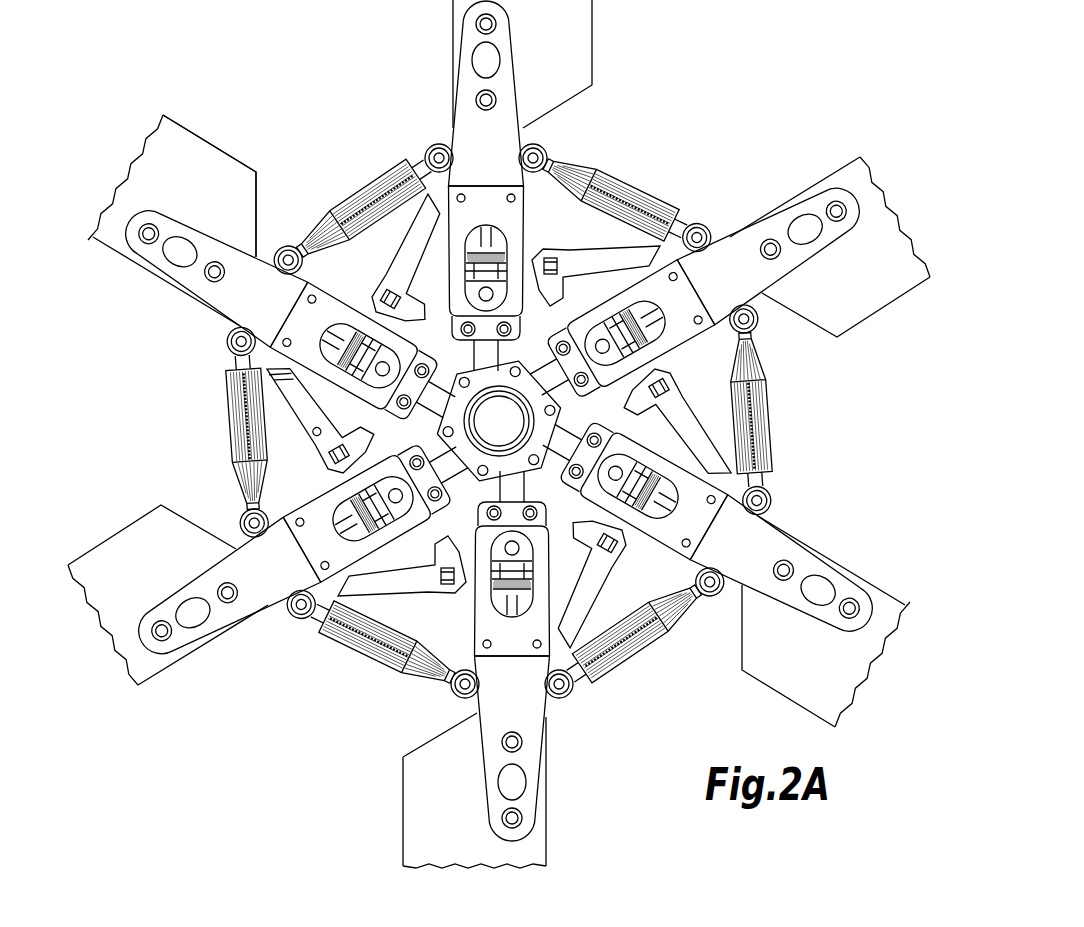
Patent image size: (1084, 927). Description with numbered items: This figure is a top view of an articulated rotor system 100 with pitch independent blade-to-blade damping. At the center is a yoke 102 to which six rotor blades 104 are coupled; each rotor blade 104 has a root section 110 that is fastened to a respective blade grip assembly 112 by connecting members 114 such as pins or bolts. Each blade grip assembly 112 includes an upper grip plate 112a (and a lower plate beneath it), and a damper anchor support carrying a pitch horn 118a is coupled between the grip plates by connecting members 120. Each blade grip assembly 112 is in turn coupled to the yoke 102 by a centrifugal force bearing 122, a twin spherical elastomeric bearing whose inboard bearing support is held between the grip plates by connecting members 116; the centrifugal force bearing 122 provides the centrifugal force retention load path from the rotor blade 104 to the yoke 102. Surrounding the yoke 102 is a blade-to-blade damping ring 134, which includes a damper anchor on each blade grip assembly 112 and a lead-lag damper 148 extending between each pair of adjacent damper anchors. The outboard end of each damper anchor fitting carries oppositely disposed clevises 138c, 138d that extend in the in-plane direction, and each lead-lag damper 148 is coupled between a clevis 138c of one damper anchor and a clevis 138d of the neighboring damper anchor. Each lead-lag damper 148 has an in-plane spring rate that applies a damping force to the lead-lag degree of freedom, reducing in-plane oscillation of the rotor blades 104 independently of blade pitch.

The articulated rotor system 100 is at (517, 434).
The yoke 102 is at (577, 302).
The rotor blade 104 is at (170, 137).
The root section 110 is at (227, 163).
The blade grip assembly 112 is at (320, 266).
The upper grip plate 112a is at (268, 258).
The connecting member 114 is at (147, 240).
The connecting member 116 is at (298, 447).
The pitch horn 118a is at (258, 409).
The connecting member 120 is at (287, 388).
The centrifugal force bearing 122 is at (350, 342).
The blade-to-blade damping ring 134 is at (363, 183).
The clevis 138c is at (304, 264).
The clevis 138d is at (443, 150).
The lead-lag damper 148 is at (242, 431).